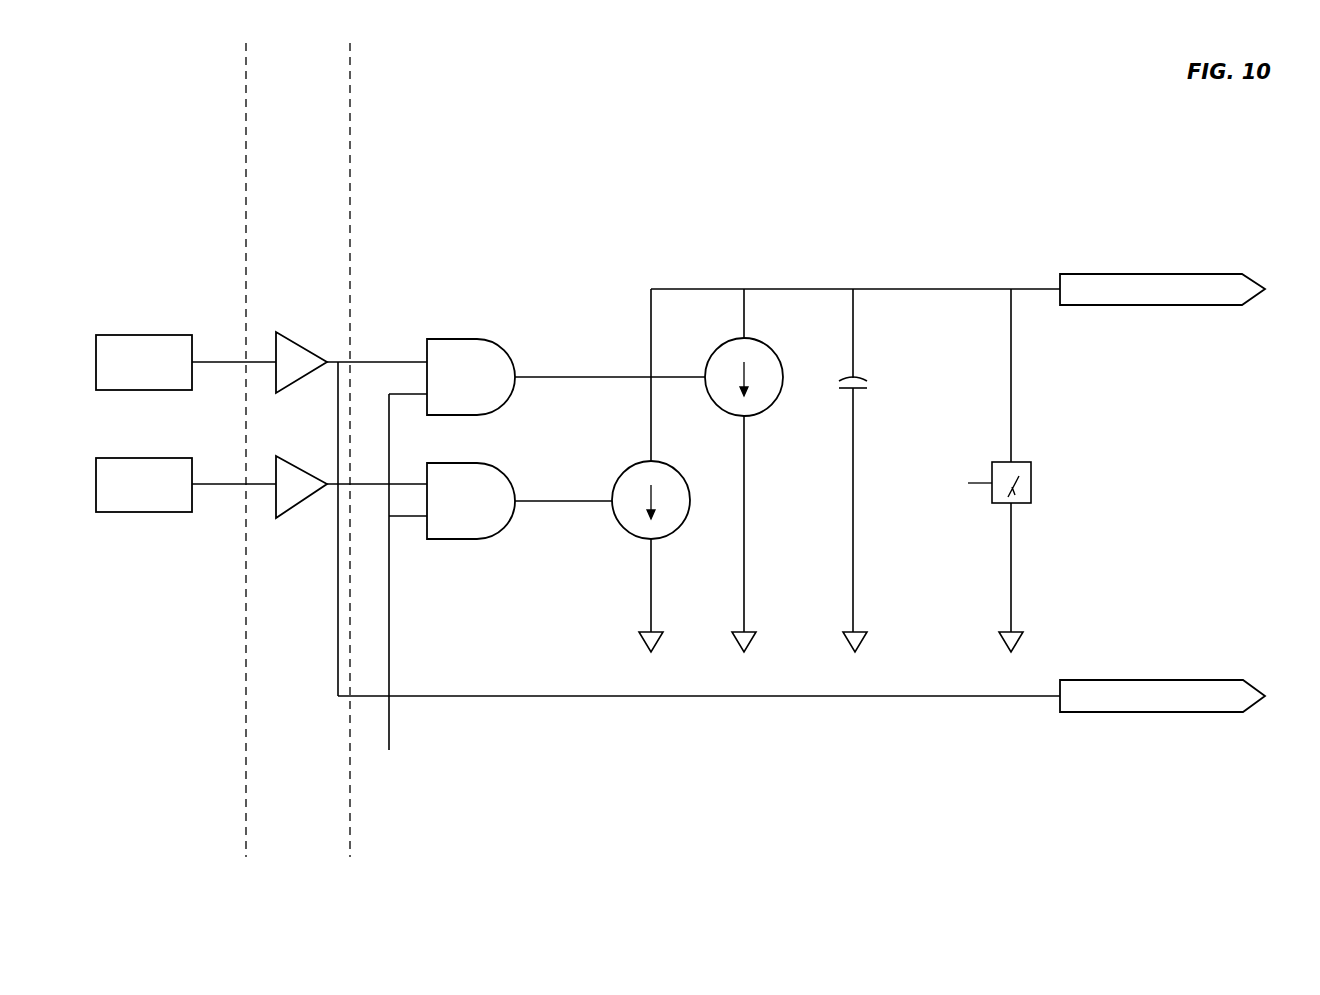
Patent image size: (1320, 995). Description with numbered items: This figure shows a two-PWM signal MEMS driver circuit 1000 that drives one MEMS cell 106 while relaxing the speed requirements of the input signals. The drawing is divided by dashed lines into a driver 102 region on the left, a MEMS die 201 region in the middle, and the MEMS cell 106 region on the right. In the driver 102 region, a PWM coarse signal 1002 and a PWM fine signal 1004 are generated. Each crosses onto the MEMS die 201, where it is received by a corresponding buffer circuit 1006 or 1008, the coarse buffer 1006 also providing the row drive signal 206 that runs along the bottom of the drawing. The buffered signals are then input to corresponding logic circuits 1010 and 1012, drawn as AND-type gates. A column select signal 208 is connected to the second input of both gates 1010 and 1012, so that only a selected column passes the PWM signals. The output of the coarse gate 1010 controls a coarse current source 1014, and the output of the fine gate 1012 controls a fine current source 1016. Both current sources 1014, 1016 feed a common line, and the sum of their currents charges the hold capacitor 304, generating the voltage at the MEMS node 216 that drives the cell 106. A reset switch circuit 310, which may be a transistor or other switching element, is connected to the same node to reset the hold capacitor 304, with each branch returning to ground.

The row driver 102 is at (198, 147).
The MEMS die 201 is at (314, 168).
The MEMS cell 106 is at (721, 147).
The PWM coarse signal 1002 is at (149, 335).
The PWM fine signal 1004 is at (145, 512).
The buffer circuit 1006 is at (314, 350).
The buffer circuit 1008 is at (308, 513).
The logic circuit 1010 is at (501, 338).
The logic circuit 1012 is at (492, 541).
The coarse current source 1014 is at (766, 410).
The fine current source 1016 is at (681, 532).
The hold capacitor 304 is at (858, 377).
The reset switch circuit 310 is at (1031, 470).
The MEMS node 216 is at (1209, 308).
The row drive signal 206 is at (1152, 680).
The column select signal 208 is at (405, 831).
The two-PWM signal MEMS driver circuit 1000 is at (1150, 843).